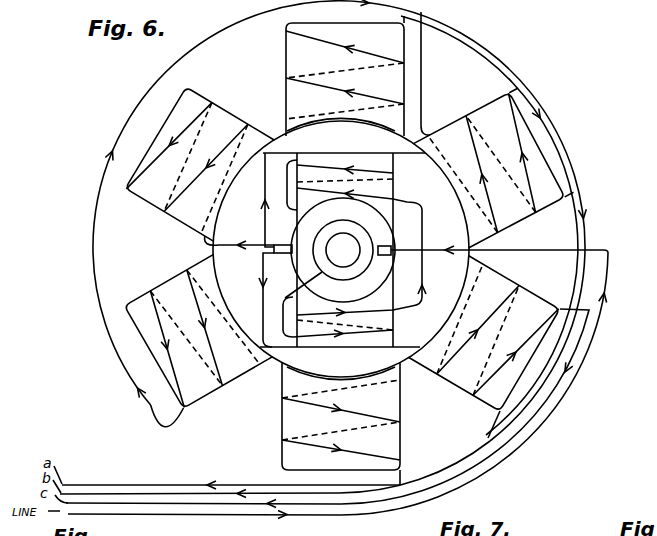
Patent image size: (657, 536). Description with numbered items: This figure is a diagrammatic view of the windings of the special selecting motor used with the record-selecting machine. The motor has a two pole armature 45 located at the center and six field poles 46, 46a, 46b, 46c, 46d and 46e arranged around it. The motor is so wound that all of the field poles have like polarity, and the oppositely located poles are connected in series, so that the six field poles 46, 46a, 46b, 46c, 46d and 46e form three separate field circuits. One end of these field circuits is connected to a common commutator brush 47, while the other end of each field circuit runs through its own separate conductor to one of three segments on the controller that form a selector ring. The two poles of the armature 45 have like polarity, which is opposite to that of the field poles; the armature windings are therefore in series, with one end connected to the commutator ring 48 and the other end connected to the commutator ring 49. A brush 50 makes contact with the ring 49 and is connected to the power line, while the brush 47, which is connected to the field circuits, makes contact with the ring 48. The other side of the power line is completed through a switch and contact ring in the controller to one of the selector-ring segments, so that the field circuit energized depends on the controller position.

The two pole armature 45 is at (400, 155).
The field pole 46 is at (285, 25).
The field pole 46a is at (544, 164).
The field pole 46b is at (530, 357).
The field pole 46c is at (330, 470).
The field pole 46d is at (155, 355).
The field pole 46e is at (160, 134).
The common commutator brush 47 is at (218, 254).
The commutator ring 48 is at (371, 205).
The commutator ring 49 is at (321, 273).
The brush 50 is at (386, 256).